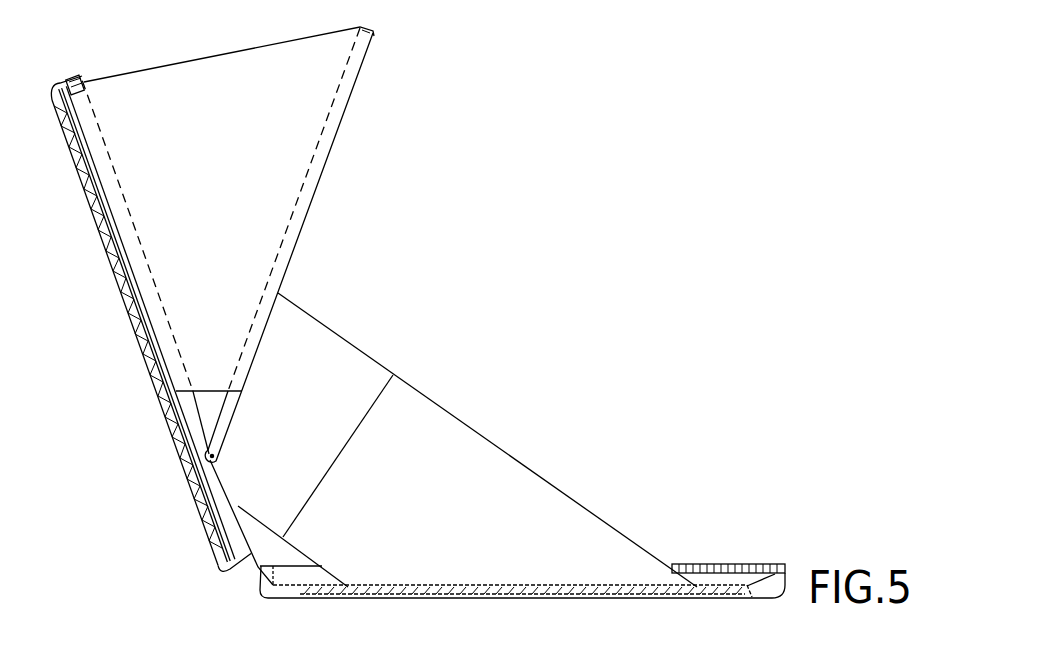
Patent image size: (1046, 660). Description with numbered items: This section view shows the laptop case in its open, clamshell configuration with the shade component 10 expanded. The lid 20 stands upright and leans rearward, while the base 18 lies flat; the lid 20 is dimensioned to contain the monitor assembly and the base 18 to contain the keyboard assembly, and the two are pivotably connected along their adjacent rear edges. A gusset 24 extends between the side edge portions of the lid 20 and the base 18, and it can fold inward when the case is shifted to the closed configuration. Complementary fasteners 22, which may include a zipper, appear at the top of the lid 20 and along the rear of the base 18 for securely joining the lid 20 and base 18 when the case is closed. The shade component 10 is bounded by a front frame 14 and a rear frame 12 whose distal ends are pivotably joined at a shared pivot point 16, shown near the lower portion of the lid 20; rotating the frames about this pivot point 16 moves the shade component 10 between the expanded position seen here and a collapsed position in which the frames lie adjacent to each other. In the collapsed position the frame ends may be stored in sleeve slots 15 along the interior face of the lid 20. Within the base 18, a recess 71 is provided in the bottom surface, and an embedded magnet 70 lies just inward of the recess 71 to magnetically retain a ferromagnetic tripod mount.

The shade component 10 is at (246, 56).
The rear frame 12 is at (62, 93).
The front frame 14 is at (370, 31).
The sleeve slots 15 is at (218, 487).
The pivot point 16 is at (220, 459).
The base 18 is at (262, 597).
The lid 20 is at (108, 231).
The fasteners 22 is at (78, 88).
The gusset 24 is at (455, 440).
The embedded magnet 70 is at (500, 585).
The recess 71 is at (657, 599).